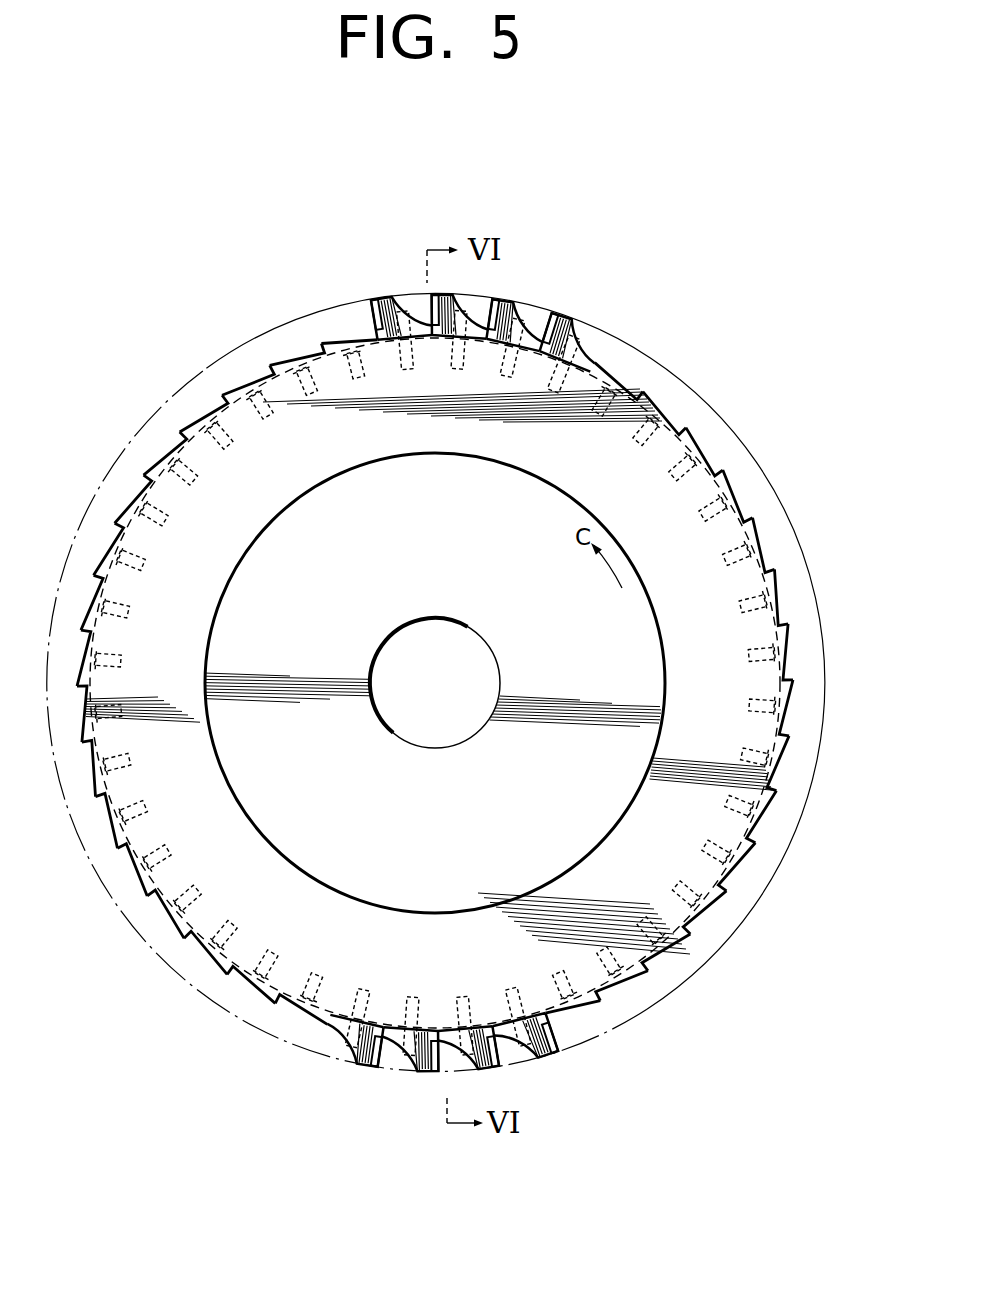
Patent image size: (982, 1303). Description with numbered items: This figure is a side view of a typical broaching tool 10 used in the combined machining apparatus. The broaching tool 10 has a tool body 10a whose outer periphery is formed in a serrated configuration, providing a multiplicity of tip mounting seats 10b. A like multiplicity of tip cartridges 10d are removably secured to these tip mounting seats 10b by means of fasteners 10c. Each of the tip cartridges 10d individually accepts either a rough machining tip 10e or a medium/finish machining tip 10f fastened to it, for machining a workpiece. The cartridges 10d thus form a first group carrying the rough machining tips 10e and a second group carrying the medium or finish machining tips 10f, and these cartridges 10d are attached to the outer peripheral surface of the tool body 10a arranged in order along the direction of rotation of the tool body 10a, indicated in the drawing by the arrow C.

The broaching tool 10 is at (685, 950).
The tool body 10a is at (653, 889).
The tip mounting seats 10b is at (728, 480).
The fasteners 10c is at (583, 343).
The tip cartridges 10d is at (370, 323).
The rough machining tip 10e is at (373, 300).
The medium/finish machining tip 10f is at (390, 1067).